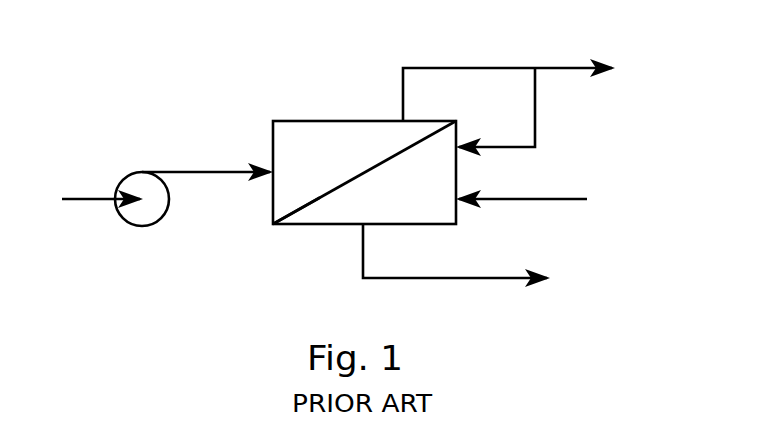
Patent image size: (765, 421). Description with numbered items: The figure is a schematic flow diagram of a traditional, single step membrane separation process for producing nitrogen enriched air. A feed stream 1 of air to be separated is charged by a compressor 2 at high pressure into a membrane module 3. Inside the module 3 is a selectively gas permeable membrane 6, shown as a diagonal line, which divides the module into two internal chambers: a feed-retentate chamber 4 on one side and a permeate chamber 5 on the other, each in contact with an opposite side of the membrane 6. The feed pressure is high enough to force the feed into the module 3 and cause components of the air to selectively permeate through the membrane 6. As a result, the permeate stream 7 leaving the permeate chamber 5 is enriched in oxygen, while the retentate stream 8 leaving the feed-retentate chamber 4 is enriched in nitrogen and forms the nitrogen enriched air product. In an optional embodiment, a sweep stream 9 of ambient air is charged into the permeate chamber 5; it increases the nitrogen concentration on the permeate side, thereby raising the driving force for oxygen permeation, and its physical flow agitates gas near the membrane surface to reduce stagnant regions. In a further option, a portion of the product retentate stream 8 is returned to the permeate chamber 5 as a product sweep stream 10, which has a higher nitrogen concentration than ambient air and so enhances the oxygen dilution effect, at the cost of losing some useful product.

The feed stream 1 is at (83, 198).
The compressor 2 is at (143, 226).
The membrane module 3 is at (300, 120).
The feed-retentate chamber 4 is at (330, 173).
The permeate chamber 5 is at (417, 213).
The selectively gas permeable membrane 6 is at (298, 211).
The permeate stream 7 is at (465, 279).
The retentate stream 8 is at (555, 68).
The sweep stream 9 is at (533, 200).
The product sweep stream 10 is at (537, 118).